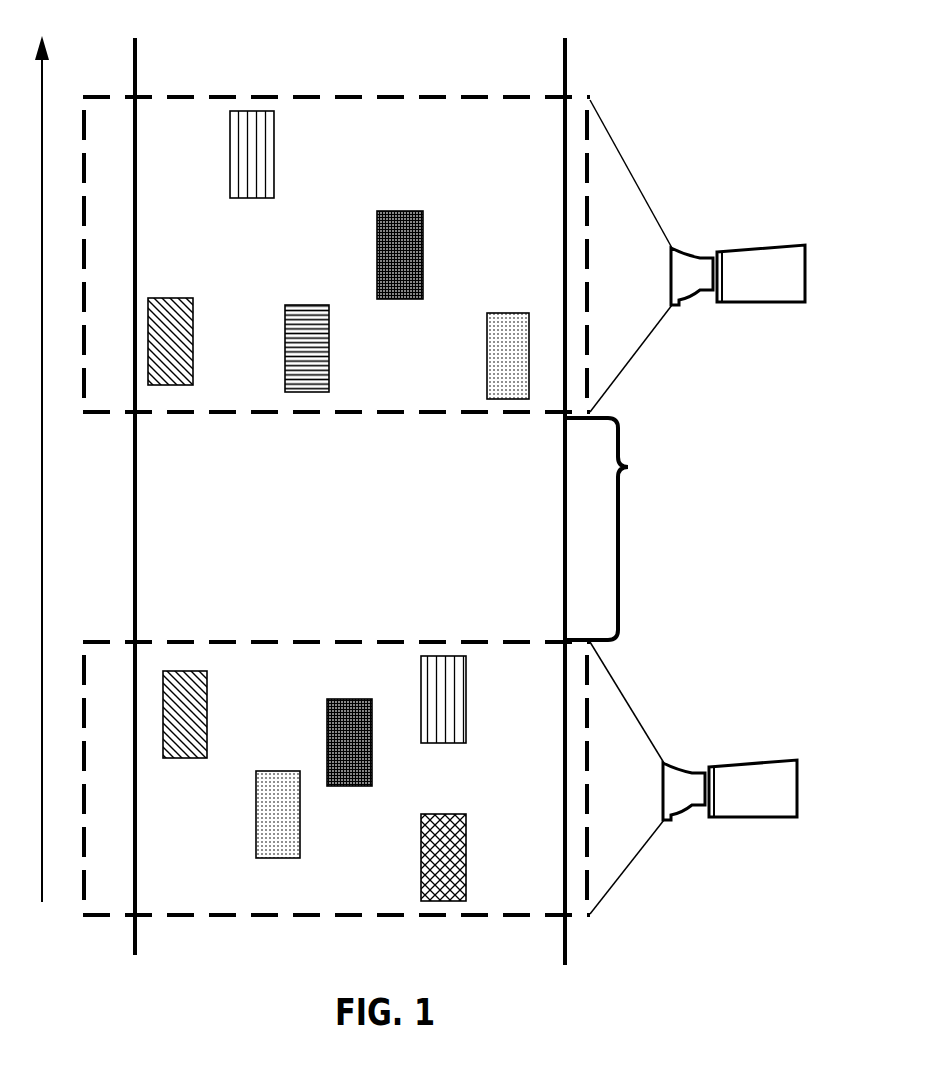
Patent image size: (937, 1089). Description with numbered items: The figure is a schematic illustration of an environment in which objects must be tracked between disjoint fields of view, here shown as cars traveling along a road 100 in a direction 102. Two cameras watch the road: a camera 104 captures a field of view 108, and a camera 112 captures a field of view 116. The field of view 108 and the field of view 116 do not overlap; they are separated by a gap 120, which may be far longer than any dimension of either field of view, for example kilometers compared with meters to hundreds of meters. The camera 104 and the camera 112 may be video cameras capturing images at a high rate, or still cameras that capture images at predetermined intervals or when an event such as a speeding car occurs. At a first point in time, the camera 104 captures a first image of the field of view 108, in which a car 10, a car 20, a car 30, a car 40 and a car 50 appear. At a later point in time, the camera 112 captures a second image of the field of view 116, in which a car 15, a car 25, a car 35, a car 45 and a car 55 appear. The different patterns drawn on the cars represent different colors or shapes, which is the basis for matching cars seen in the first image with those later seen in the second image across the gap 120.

The road 100 is at (583, 52).
The direction 102 is at (62, 87).
The camera 104 is at (676, 772).
The field of view 108 is at (490, 641).
The camera 112 is at (683, 252).
The field of view 116 is at (490, 96).
The gap 120 is at (629, 466).
The car 10 is at (208, 690).
The car 15 is at (194, 308).
The car 20 is at (301, 827).
The car 25 is at (275, 128).
The car 30 is at (373, 718).
The car 35 is at (330, 320).
The car 40 is at (467, 672).
The car 45 is at (424, 232).
The car 50 is at (467, 832).
The car 55 is at (530, 330).